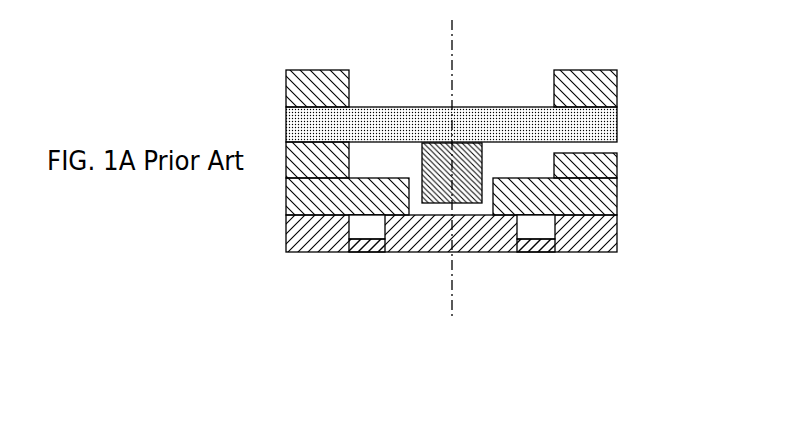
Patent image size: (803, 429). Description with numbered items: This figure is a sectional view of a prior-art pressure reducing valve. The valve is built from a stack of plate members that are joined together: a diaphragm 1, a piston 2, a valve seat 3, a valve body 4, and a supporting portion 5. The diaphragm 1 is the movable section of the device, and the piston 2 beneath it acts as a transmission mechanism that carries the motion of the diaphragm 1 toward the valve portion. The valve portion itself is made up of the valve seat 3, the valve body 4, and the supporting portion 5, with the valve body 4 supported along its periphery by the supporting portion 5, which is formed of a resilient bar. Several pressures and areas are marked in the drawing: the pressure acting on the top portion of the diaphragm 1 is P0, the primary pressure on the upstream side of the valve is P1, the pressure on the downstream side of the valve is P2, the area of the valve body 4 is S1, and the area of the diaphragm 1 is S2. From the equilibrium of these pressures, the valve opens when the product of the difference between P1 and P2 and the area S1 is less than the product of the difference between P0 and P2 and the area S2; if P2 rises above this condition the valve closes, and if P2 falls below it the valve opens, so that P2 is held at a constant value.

The diaphragm 1 is at (532, 120).
The piston 2 is at (467, 157).
The valve seat 3 is at (508, 214).
The valve body 4 is at (484, 252).
The supporting portion 5 is at (356, 252).
The area of the valve body S1 is at (444, 243).
The area of the diaphragm S2 is at (427, 119).
The pressure at top portion of the diaphragm P0 is at (515, 93).
The primary pressure P1 is at (452, 187).
The downstream pressure P2 is at (531, 160).